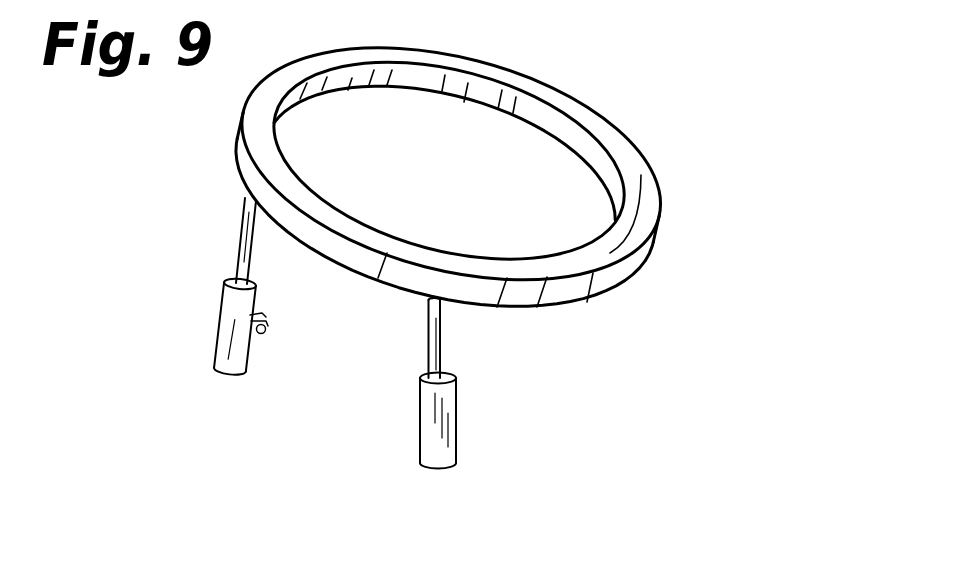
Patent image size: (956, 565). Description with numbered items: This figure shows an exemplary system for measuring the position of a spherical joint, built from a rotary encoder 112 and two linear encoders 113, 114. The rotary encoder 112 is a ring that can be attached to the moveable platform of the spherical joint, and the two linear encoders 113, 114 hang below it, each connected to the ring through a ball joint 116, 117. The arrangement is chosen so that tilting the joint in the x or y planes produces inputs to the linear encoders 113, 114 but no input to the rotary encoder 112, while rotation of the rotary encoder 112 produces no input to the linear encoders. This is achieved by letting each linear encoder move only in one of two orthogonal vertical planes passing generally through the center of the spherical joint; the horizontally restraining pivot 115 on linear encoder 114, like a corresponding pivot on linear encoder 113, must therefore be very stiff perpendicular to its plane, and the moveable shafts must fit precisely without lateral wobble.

The rotary encoder 112 is at (612, 273).
The linear encoder 113 is at (435, 445).
The linear encoder 114 is at (227, 333).
The horizontally restraining pivot 115 is at (267, 333).
The ball joint 116 is at (428, 300).
The ball joint 117 is at (248, 197).